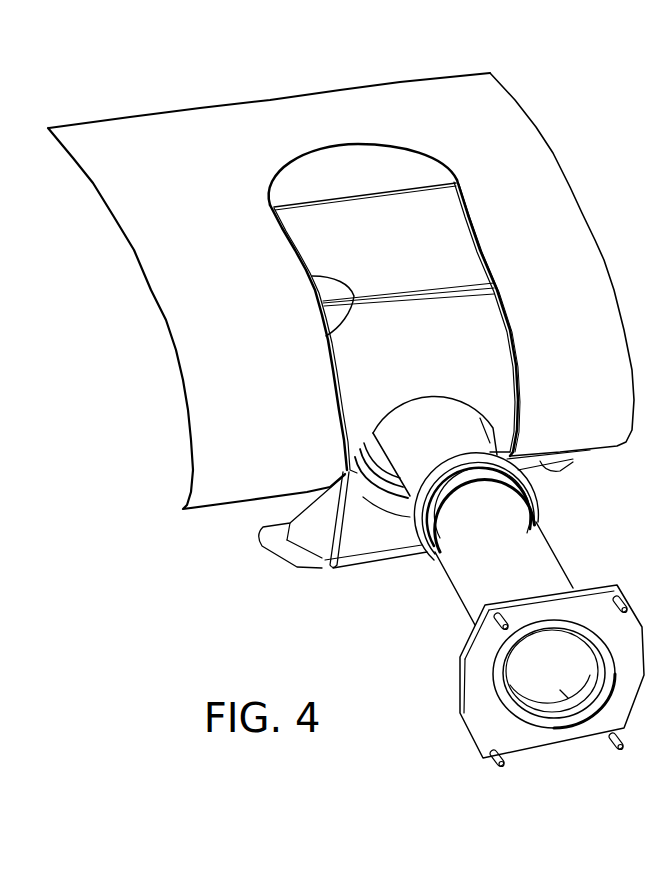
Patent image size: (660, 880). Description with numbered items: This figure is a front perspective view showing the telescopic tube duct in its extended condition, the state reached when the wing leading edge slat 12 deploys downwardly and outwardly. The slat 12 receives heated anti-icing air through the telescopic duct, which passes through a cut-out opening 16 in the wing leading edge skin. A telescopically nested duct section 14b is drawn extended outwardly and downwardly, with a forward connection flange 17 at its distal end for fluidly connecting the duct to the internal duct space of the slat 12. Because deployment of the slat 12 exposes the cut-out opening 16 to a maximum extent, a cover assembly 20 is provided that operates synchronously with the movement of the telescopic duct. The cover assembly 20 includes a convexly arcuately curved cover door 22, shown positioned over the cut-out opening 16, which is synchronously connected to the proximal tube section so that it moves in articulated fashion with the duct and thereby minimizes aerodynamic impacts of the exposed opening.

The leading edge slat 12 is at (188, 278).
The telescopically nested duct section 14b is at (460, 442).
The cut-out opening 16 is at (350, 290).
The forward connection flange 17 is at (584, 733).
The cover assembly 20 is at (486, 230).
The cover door 22 is at (393, 340).